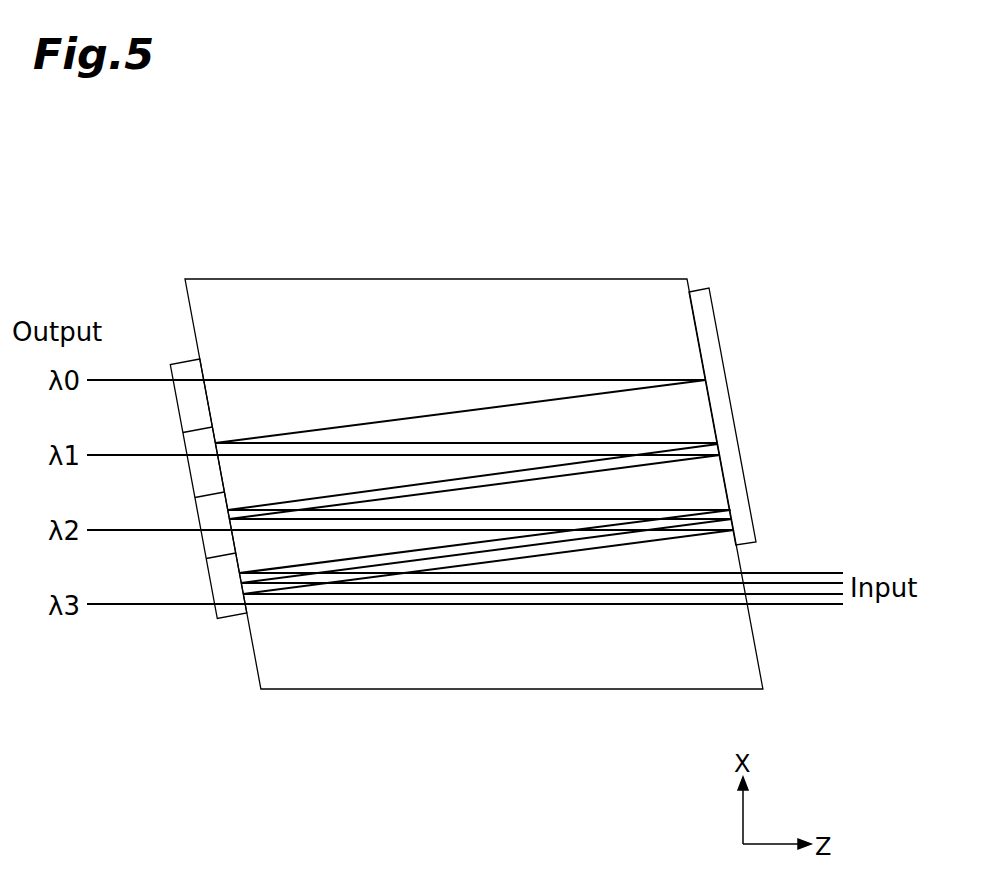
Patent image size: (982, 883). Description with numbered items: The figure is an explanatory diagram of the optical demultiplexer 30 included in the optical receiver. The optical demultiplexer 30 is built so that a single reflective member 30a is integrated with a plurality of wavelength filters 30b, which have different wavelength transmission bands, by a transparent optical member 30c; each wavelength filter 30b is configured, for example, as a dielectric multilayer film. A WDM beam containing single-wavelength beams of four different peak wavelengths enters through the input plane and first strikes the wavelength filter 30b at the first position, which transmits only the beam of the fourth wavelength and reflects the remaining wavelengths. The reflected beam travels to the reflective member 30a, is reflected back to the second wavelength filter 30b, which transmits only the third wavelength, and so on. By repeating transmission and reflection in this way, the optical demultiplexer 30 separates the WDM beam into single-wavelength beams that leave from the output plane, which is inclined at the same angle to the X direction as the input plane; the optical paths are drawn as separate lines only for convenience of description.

The optical demultiplexer 30 is at (452, 256).
The reflective member 30a is at (728, 335).
The wavelength filter 30b is at (183, 357).
The transparent optical member 30c is at (595, 300).